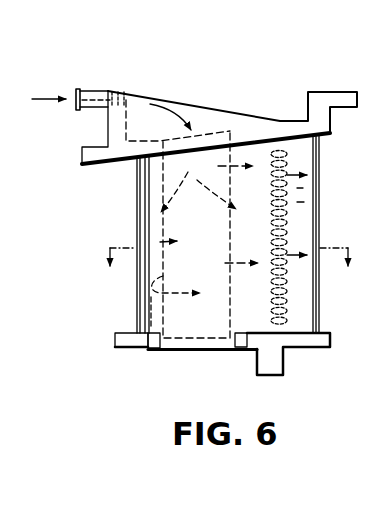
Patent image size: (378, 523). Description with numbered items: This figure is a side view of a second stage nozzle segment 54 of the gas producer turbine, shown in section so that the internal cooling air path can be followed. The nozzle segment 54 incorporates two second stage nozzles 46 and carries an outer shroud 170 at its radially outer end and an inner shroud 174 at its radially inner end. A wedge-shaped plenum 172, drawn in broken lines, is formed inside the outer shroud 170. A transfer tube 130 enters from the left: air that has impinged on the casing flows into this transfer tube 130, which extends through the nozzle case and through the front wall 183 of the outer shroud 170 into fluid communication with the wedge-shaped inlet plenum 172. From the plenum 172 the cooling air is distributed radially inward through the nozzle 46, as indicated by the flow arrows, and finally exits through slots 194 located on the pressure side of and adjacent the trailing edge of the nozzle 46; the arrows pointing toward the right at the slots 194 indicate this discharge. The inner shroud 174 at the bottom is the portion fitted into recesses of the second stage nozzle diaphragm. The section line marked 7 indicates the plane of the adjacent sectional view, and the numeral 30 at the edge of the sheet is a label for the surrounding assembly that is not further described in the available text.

The nozzle segment 54 is at (101, 80).
The transfer tube 130 is at (77, 92).
The front wall 183 is at (108, 129).
The outer shroud 170 is at (82, 160).
The wedge-shaped plenum 172 is at (210, 131).
The second stage nozzle 46 is at (137, 184).
The slot 194 is at (320, 193).
The inner shroud 174 is at (115, 338).
The section line 7- 7 is at (230, 245).
The appliance assembly 30 is at (9, 261).